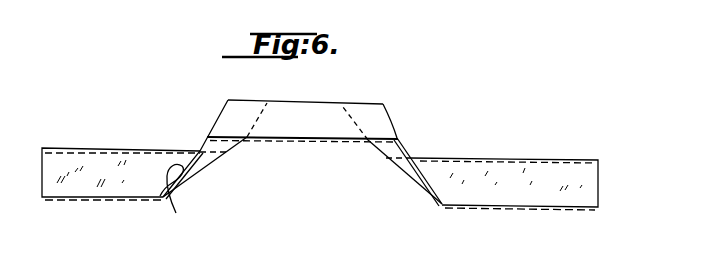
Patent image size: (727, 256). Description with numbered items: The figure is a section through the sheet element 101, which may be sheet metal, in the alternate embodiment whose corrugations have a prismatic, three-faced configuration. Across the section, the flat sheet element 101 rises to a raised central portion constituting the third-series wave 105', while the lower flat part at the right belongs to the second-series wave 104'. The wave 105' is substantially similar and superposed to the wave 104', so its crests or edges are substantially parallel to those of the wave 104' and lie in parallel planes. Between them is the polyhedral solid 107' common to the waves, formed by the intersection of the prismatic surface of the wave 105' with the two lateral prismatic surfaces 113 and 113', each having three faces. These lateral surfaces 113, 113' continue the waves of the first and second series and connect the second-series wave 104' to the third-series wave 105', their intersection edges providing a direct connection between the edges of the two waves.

The sheet element 101 is at (58, 144).
The second-series wave 104' is at (520, 184).
The third-series wave 105' is at (311, 109).
The polyhedral solid 107' is at (200, 149).
The lateral prismatic surface 113 is at (178, 203).
The lateral prismatic surface 113' is at (427, 165).